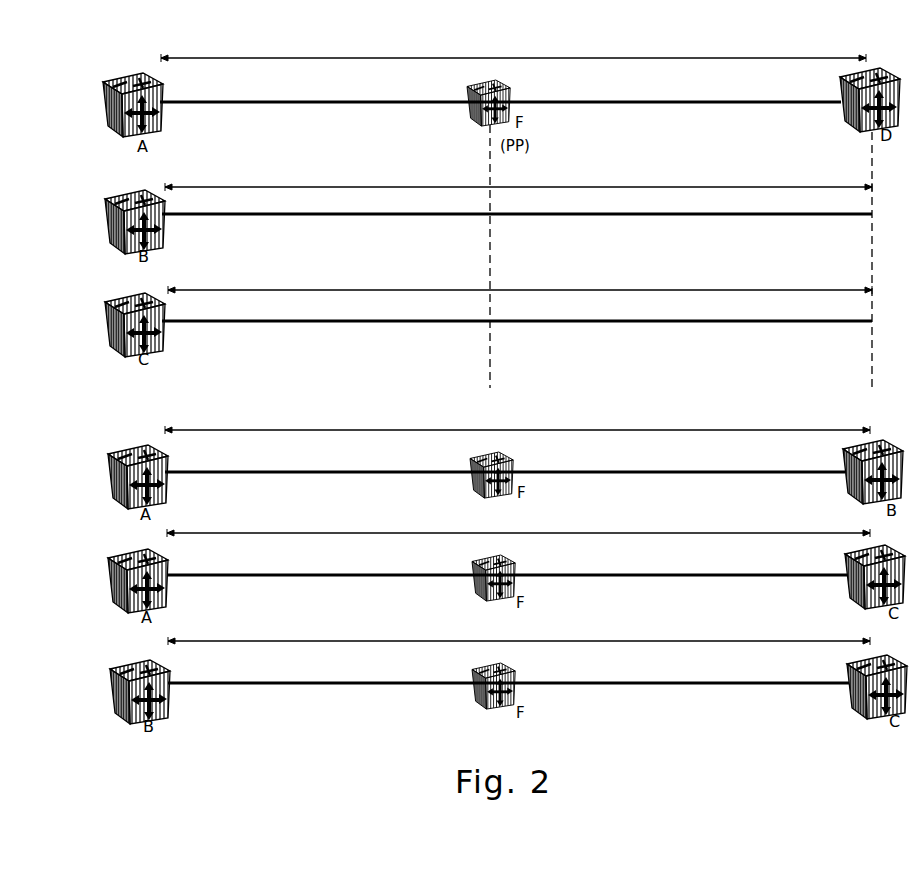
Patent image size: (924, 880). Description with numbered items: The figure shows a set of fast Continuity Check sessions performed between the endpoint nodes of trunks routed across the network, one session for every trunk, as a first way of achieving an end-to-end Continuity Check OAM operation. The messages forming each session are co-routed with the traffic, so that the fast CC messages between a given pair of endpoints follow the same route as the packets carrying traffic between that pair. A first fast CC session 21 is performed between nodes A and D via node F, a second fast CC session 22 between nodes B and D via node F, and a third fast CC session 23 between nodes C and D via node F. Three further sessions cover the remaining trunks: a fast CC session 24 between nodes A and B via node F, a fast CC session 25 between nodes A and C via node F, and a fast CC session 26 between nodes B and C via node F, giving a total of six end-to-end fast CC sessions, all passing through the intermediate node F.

The first fast CC session 21 is at (513, 37).
The second fast CC session 22 is at (518, 169).
The third fast CC session 23 is at (520, 271).
The fast CC session 24 is at (517, 410).
The fast CC session 25 is at (518, 513).
The fast CC session 26 is at (519, 622).